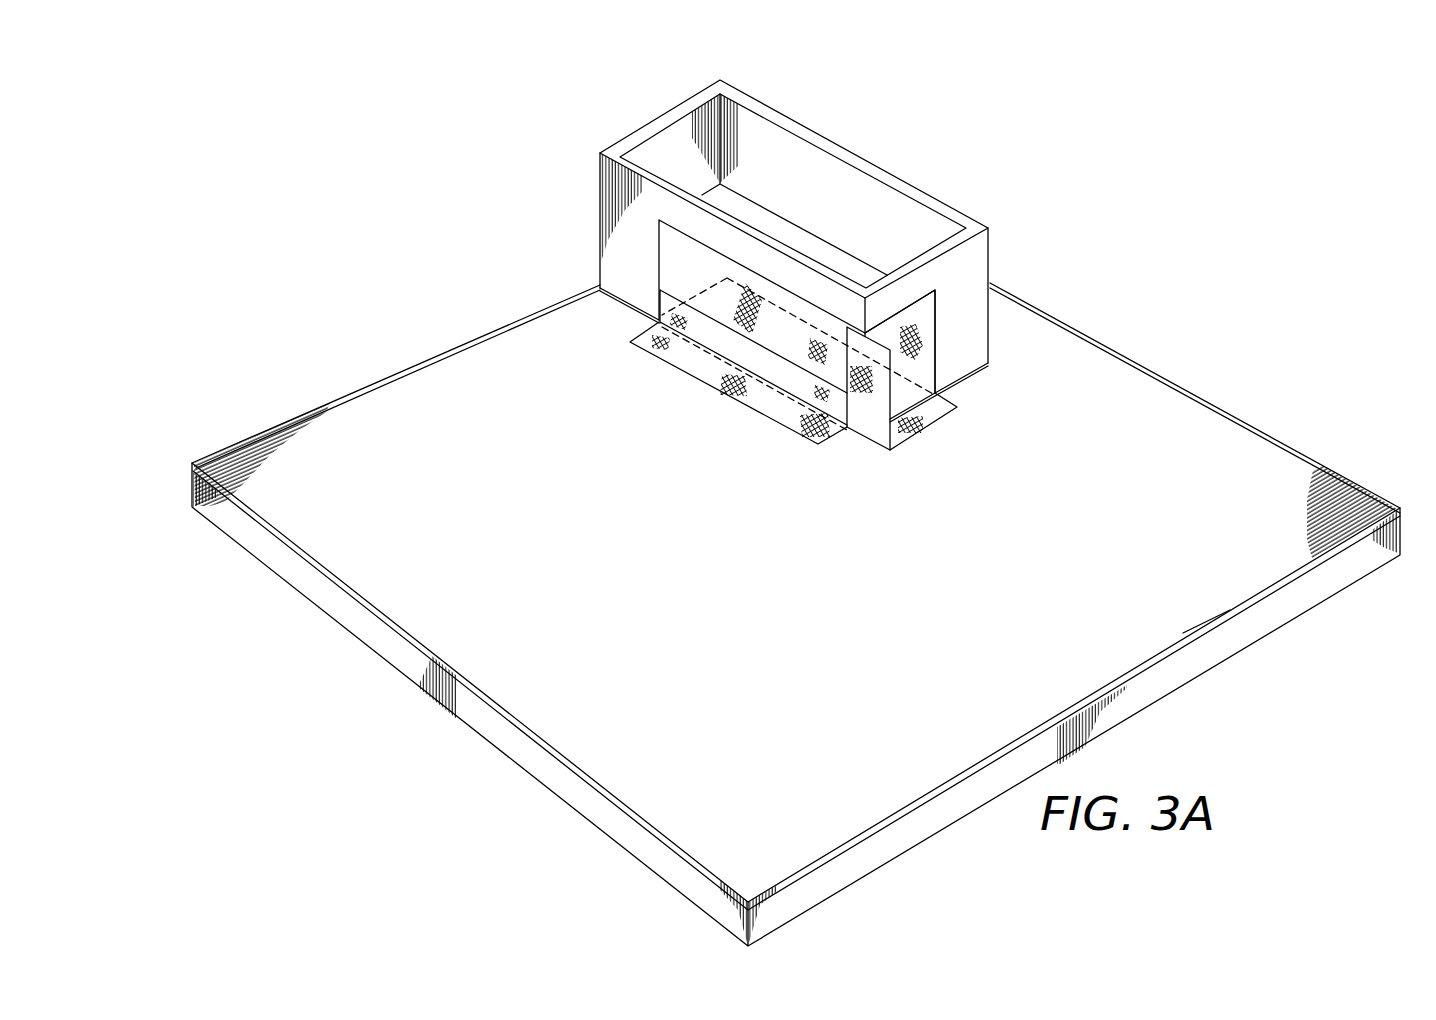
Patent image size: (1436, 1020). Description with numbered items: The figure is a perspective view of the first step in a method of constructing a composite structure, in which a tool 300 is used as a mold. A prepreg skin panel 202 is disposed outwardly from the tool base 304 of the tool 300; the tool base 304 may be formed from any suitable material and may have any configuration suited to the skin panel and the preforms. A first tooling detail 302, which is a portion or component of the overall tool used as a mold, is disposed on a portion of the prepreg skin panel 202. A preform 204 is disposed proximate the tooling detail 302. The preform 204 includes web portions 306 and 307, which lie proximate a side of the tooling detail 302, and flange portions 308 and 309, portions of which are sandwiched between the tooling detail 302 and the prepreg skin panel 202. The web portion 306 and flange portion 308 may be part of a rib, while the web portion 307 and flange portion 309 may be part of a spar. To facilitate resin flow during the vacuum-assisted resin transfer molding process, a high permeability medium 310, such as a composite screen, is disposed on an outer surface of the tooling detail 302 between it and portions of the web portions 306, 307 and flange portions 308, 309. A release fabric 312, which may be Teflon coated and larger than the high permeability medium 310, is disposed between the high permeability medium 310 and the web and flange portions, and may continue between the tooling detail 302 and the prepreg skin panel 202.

The prepreg skin panel 202 is at (1152, 380).
The preform 204 is at (632, 288).
The tool 300 is at (876, 129).
The first tooling detail 302 is at (986, 256).
The tool base 304 is at (1237, 637).
The web portion 306 is at (923, 317).
The web portion 307 is at (773, 297).
The flange portion 308 is at (933, 413).
The flange portion 309 is at (695, 365).
The high permeability medium 310 is at (713, 300).
The release fabric 312 is at (977, 377).